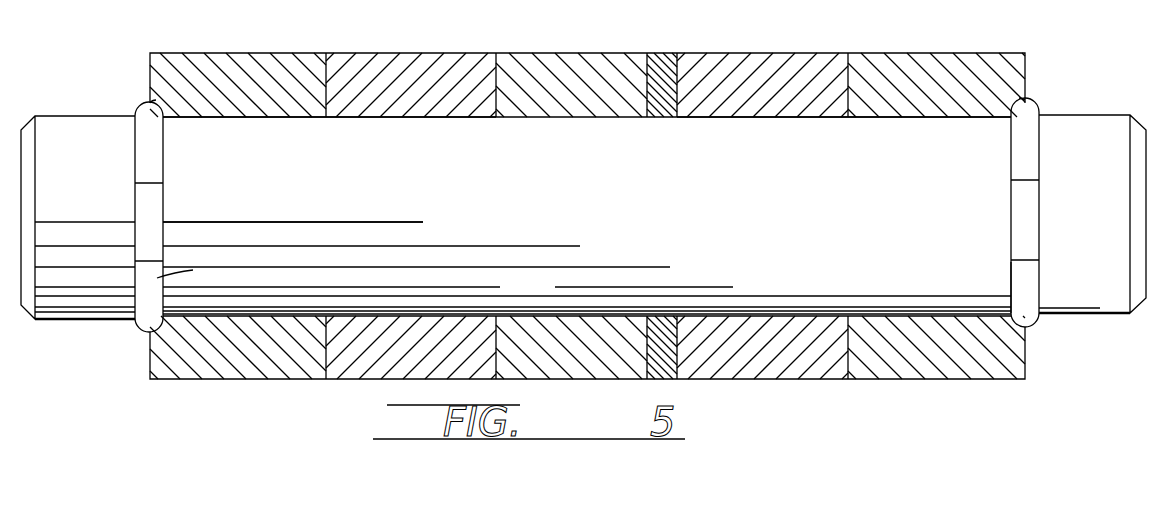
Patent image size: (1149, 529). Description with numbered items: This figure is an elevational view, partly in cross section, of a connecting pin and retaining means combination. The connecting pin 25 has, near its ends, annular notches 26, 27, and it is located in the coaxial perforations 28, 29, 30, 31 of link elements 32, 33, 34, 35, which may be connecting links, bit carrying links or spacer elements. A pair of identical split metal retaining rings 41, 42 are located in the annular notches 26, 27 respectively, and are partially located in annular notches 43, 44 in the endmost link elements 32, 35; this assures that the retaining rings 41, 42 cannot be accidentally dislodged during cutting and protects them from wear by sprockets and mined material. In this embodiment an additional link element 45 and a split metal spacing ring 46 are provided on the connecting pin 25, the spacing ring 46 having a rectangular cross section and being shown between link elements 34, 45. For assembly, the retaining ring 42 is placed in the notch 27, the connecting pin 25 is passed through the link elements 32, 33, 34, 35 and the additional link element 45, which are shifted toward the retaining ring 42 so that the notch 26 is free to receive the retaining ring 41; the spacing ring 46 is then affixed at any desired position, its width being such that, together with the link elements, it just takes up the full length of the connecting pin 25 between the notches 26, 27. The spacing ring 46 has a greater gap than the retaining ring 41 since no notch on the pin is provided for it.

The connecting pin 25 is at (623, 199).
The annular notch 26 is at (157, 207).
The annular notch 27 is at (1017, 237).
The coaxial perforation 28 is at (257, 118).
The coaxial perforation 29 is at (381, 118).
The coaxial perforation 30 is at (767, 118).
The coaxial perforation 31 is at (900, 118).
The link element 32 is at (267, 53).
The link element 33 is at (407, 53).
The link element 34 is at (767, 53).
The link element 35 is at (900, 56).
The split metal retaining ring 41 is at (293, 210).
The split metal retaining ring 42 is at (1017, 288).
The annular notch 43 is at (168, 100).
The annular notch 44 is at (1010, 102).
The additional link element 45 is at (550, 53).
The split metal spacing ring 46 is at (663, 53).